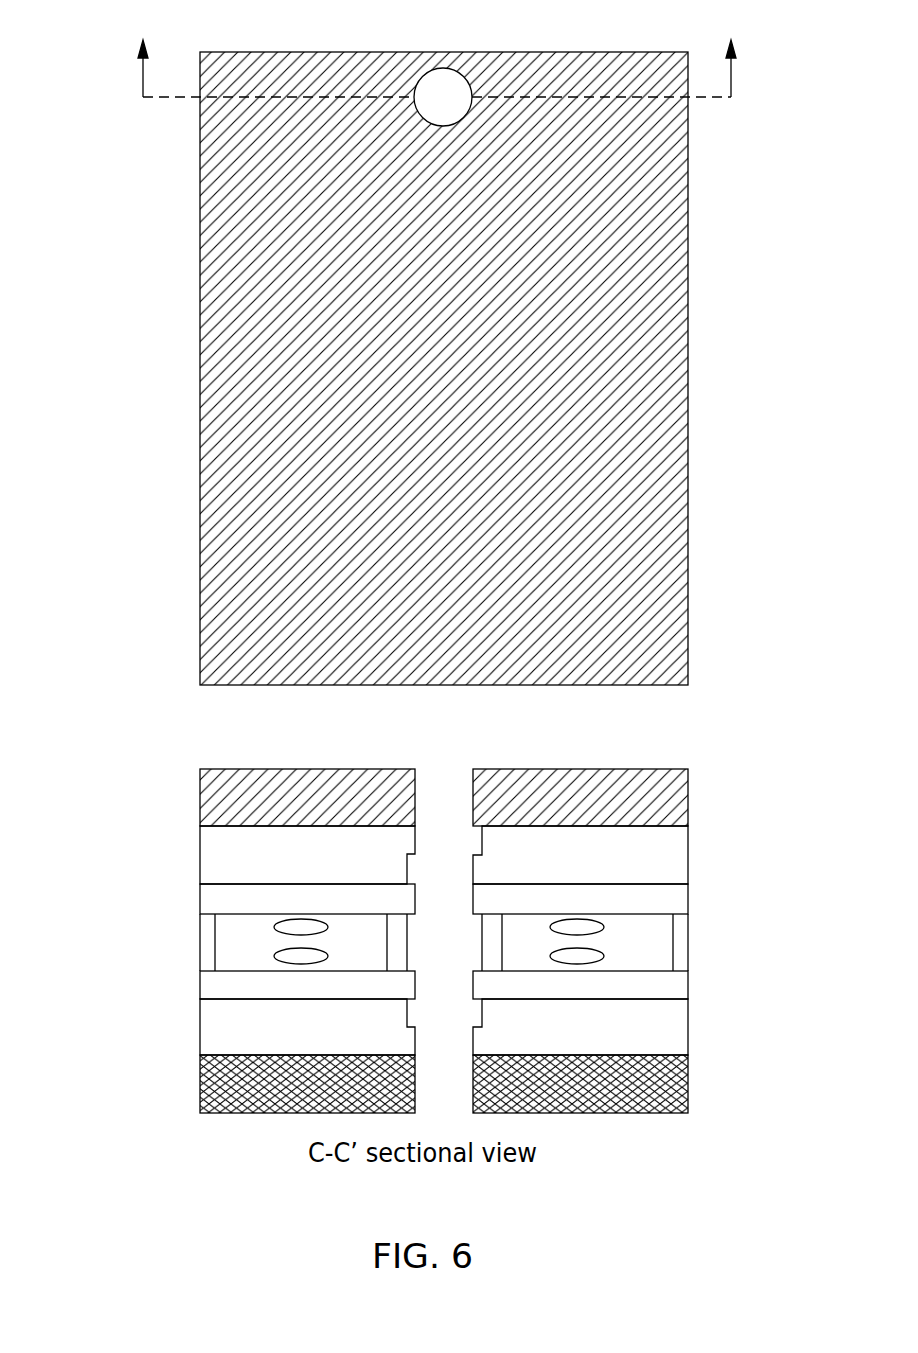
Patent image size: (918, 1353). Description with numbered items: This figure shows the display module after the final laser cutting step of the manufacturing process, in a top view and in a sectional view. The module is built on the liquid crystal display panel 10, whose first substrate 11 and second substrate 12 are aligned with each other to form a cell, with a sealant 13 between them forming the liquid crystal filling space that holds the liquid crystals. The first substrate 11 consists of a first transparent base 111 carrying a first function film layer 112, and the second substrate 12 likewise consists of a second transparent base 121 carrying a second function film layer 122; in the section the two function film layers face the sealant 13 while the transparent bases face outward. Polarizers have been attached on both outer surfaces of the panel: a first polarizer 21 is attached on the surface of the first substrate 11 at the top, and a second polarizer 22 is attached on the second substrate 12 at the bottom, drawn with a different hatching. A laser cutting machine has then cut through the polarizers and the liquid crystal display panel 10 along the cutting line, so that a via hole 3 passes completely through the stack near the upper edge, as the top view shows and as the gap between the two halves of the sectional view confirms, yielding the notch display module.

The liquid crystal display panel 10 is at (104, 45).
The via hole 3 is at (433, 90).
The first polarizer 21 is at (645, 416).
The first substrate 11 is at (195, 827).
The first transparent base 111 is at (676, 873).
The first function film layer 112 is at (676, 903).
The sealant 13 is at (683, 947).
The second substrate 12 is at (195, 971).
The second function film layer 122 is at (670, 997).
The second transparent base 121 is at (680, 1020).
The second polarizer 22 is at (668, 1098).